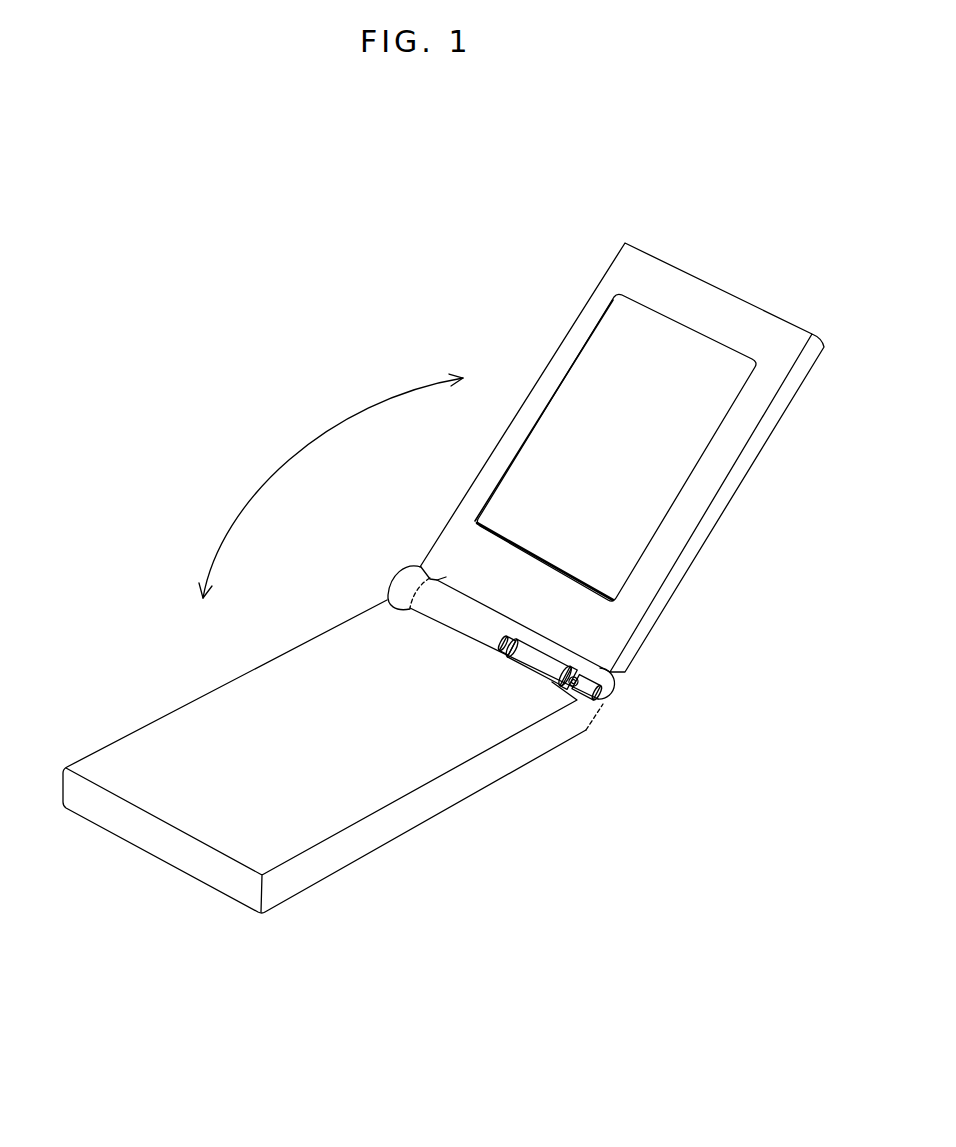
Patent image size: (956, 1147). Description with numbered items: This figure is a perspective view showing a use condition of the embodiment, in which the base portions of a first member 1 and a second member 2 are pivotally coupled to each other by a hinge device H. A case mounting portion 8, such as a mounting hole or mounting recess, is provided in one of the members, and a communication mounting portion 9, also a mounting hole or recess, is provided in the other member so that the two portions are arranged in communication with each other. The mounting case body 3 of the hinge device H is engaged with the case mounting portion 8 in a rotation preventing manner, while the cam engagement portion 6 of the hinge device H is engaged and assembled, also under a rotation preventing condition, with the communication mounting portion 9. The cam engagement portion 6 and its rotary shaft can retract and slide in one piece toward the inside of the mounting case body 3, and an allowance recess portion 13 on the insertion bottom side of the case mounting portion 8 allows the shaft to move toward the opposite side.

The first member 1 is at (402, 820).
The second member 2 is at (727, 492).
The mounting case body 3 is at (535, 663).
The cam engagement portion 6 is at (582, 692).
The case mounting portion 8 is at (531, 640).
The communication mounting portion 9 is at (612, 689).
The allowance recess portion 13 is at (503, 648).
The hinge device H is at (562, 690).